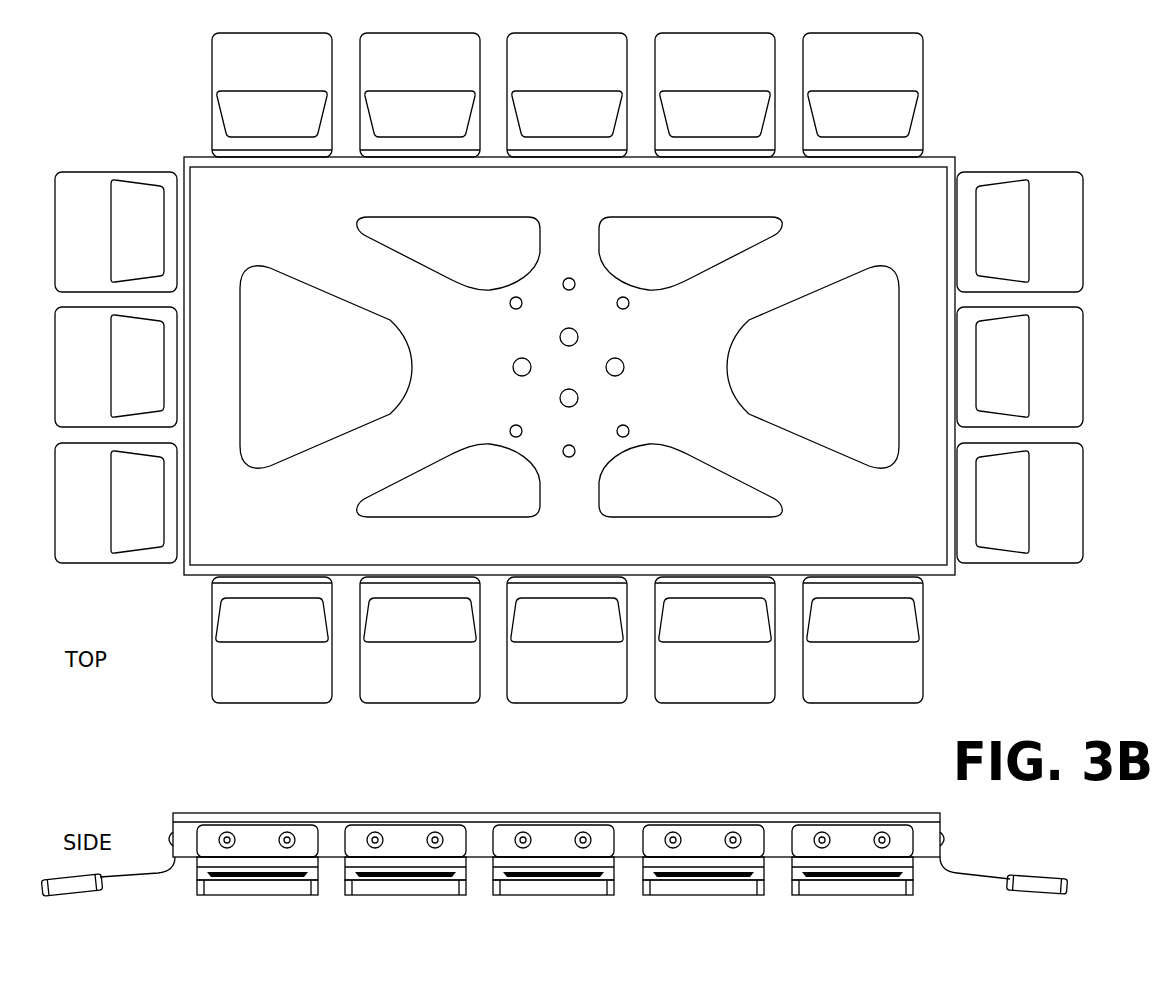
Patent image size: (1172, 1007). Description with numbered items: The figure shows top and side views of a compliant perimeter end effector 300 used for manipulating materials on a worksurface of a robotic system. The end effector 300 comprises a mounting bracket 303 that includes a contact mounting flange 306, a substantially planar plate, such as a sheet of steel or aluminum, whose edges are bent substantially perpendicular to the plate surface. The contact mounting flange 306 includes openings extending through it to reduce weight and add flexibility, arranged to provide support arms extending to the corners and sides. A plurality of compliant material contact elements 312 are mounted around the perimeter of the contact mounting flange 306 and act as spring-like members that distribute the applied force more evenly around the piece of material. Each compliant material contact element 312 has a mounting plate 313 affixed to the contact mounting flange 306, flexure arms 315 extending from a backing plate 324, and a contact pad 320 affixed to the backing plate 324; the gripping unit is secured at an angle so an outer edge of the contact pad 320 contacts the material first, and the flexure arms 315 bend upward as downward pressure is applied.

The compliant perimeter end effector 300 is at (180, 713).
The mounting bracket 303 is at (200, 143).
The contact mounting flange 306 is at (947, 570).
The compliant material contact element 312 is at (1053, 152).
The mounting plate 313 is at (705, 840).
The flexure arm 315 is at (932, 117).
The contact pad 320 is at (693, 887).
The backing plate 324 is at (1080, 533).